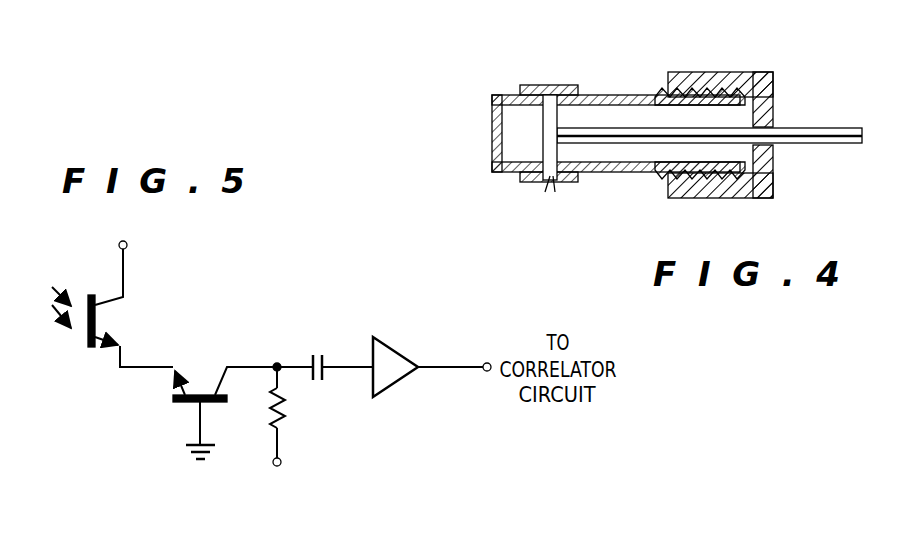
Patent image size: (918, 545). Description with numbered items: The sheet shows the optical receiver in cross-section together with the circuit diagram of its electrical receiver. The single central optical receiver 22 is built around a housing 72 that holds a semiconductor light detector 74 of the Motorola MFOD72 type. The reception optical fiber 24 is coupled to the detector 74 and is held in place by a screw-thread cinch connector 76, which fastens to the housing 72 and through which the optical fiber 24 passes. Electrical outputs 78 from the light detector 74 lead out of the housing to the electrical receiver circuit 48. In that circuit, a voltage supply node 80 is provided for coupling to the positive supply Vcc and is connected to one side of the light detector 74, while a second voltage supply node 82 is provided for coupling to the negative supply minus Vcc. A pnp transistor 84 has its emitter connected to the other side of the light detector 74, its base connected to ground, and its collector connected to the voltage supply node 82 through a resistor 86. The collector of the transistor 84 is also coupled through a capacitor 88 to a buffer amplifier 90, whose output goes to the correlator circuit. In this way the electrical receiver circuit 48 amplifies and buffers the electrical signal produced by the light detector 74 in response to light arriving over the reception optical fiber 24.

In FIG. 4, the single central optical receiver 22 is at (655, 109).
In FIG. 4, the reception optical fiber 24 is at (829, 128).
In FIG. 4, the housing 72 is at (512, 96).
In FIG. 4, the semiconductor light detector 74 is at (548, 136).
In FIG. 5, the semiconductor light detector 74 is at (108, 321).
In FIG. 4, the screw-thread cinch connector 76 is at (758, 72).
In FIG. 4, the electrical outputs 78 is at (545, 202).
In FIG. 5, the electrical receiver circuit 48 is at (246, 322).
In FIG. 5, the voltage supply node 80 is at (119, 245).
In FIG. 5, the voltage supply node 82 is at (273, 462).
In FIG. 5, the pnp transistor 84 is at (200, 373).
In FIG. 5, the resistor 86 is at (287, 401).
In FIG. 5, the capacitor 88 is at (317, 355).
In FIG. 5, the buffer amplifier 90 is at (394, 351).